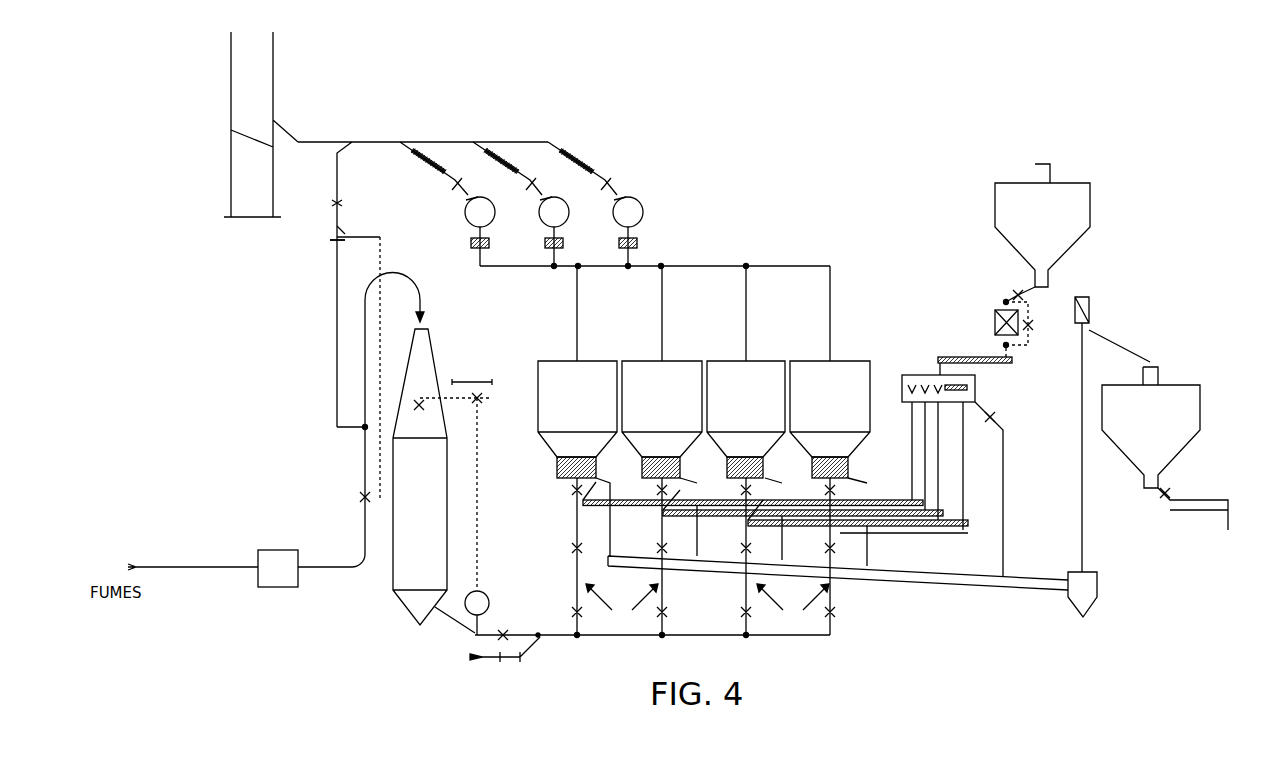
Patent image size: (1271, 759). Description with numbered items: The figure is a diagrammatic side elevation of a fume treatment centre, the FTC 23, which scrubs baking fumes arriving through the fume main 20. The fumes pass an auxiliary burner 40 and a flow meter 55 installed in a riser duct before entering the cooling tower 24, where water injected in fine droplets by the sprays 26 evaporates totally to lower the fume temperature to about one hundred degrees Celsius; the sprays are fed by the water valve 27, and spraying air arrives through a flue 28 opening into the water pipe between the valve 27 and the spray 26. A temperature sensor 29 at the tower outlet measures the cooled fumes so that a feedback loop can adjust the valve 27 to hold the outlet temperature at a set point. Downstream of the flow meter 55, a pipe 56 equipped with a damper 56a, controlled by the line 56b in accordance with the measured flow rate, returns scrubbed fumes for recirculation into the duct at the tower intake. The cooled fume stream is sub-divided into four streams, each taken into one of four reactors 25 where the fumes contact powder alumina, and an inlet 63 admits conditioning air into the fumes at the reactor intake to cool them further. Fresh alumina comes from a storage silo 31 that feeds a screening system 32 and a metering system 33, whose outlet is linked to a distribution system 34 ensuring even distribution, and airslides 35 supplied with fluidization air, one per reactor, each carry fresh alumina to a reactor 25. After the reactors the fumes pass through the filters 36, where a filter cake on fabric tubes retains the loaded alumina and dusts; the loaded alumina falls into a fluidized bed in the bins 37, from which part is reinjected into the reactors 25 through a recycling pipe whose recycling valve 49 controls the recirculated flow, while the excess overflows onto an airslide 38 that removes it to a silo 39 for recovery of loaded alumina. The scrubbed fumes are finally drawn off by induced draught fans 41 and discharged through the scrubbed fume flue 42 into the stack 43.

The fume main 20 is at (224, 565).
The FTC 23 is at (941, 650).
The cooling tower 24 is at (403, 572).
The reactors 25 is at (707, 608).
The sprays 26 is at (416, 405).
The valve 27 is at (481, 404).
The flue 28 is at (470, 380).
The temperature sensor 29 is at (488, 595).
The storage silo 31 is at (995, 195).
The screening system 32 is at (995, 318).
The metering system 33 is at (947, 356).
The distribution system 34 is at (910, 375).
The airslides 35 is at (920, 538).
The filters 36 is at (806, 382).
The bins 37 is at (850, 465).
The airslide 38 is at (915, 582).
The silo 39 is at (1200, 400).
The auxiliary burner 40 is at (286, 550).
The induced draught fans 41 is at (630, 200).
The scrubbed fume flue 42 is at (380, 142).
The stack 43 is at (238, 64).
The recycling valve 49 is at (835, 493).
The flow meter 55 is at (360, 496).
The pipe 56 is at (335, 305).
The damper 56a is at (335, 241).
The line 56b is at (384, 262).
The inlet 63 is at (500, 665).